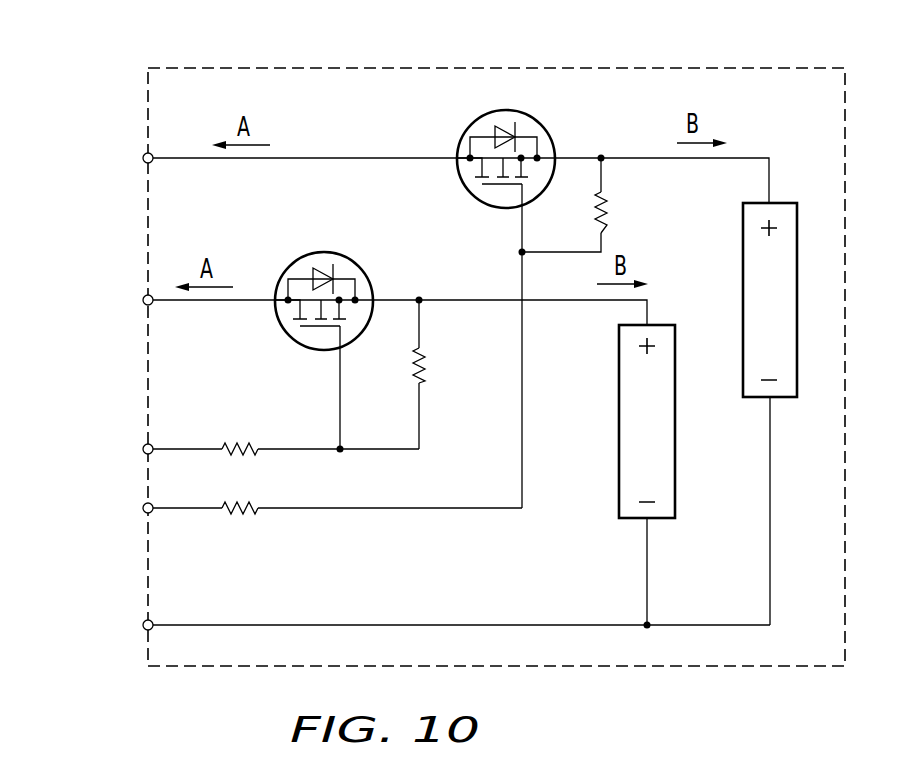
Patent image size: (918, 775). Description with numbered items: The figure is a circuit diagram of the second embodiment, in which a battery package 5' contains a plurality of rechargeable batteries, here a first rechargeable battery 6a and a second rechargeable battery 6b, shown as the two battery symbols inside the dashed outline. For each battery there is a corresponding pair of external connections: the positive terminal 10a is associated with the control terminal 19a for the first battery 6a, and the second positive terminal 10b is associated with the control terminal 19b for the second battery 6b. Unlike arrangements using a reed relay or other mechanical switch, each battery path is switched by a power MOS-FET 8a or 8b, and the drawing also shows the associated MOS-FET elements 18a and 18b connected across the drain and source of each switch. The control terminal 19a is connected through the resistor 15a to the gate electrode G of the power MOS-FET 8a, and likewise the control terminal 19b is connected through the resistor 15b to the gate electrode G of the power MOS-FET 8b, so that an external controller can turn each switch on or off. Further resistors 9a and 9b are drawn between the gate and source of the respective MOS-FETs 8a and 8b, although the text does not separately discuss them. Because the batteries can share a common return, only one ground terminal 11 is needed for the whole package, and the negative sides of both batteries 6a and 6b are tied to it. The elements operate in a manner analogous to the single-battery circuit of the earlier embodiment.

The battery package 5' is at (497, 345).
The positive terminal 10a is at (143, 158).
The second positive terminal 10b is at (143, 300).
The control terminal 19a is at (143, 508).
The control terminal 19b is at (143, 449).
The ground terminal 11 is at (143, 625).
The power MOS-FET 8a is at (478, 118).
The power MOS-FET 8b is at (296, 260).
The power MOS-FET element 18a is at (512, 128).
The power MOS-FET element 18b is at (330, 270).
The first gate resistor 9a is at (605, 220).
The second gate resistor 9b is at (422, 380).
The resistor 15a is at (245, 512).
The resistor 15b is at (228, 444).
The rechargeable battery 6a is at (783, 203).
The rechargeable battery 6b is at (660, 325).